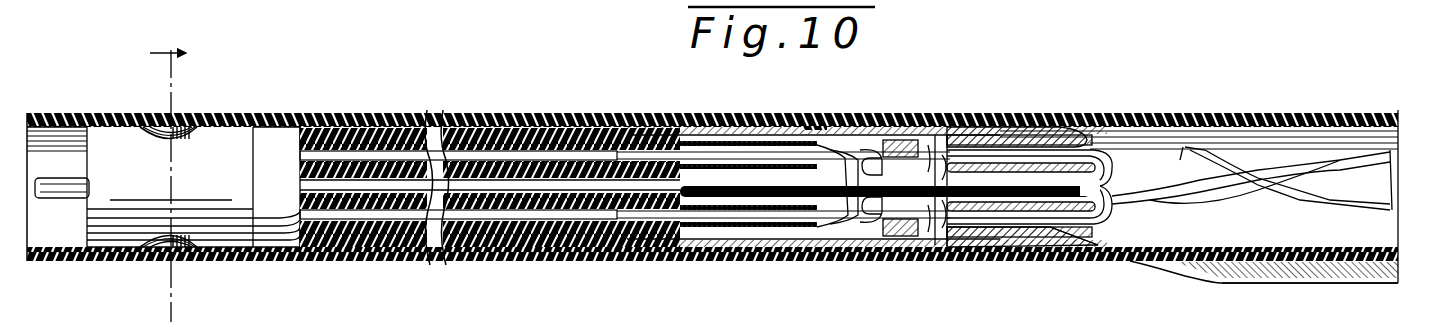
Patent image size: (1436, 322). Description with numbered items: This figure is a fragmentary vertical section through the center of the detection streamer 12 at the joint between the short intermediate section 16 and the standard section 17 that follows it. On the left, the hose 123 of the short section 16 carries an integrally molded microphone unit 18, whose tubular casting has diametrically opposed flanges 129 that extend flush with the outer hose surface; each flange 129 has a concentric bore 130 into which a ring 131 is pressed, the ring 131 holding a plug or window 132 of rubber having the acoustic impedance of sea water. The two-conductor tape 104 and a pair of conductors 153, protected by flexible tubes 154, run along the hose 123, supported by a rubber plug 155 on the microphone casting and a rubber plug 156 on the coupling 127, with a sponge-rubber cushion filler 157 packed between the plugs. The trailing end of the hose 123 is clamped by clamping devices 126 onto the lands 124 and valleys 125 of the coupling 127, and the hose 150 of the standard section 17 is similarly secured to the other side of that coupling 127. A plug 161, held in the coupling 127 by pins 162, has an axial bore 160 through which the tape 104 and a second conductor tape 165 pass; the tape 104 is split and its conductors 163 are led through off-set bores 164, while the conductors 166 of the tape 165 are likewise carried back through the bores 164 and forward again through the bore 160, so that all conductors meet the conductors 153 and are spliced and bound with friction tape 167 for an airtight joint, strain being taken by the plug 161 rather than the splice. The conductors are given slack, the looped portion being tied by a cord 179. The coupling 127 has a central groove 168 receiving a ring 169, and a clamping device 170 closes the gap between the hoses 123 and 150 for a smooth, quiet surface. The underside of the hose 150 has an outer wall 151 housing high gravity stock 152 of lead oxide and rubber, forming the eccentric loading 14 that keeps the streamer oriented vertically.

The detection streamer 12 is at (53, 111).
The eccentric loading 14 is at (1330, 297).
The short intermediate section 16 is at (100, 262).
The standard section 17 is at (1098, 262).
The microphone unit 18 is at (170, 187).
The conductor tape 104 is at (78, 185).
The hose 123 is at (462, 262).
The lands 124 is at (702, 113).
The valleys 125 is at (741, 113).
The clamping devices 126 is at (665, 113).
The coupling 127 is at (712, 262).
The flanges 129 is at (150, 126).
The bore 130 is at (193, 122).
The ring 131 is at (165, 127).
The plug or window 132 is at (176, 127).
The hose 150 is at (1130, 113).
The outer wall 151 is at (1268, 280).
The high gravity stock 152 is at (1361, 284).
The conductors 153 is at (838, 255).
The flexible tubes 154 is at (358, 140).
The rubber plug 155 is at (276, 140).
The rubber plug 156 is at (614, 113).
The cushion filler 157 is at (432, 112).
The axial bore 160 is at (1036, 160).
The plug 161 is at (1097, 236).
The pins 162 is at (985, 125).
The conductors 163 is at (936, 136).
The off-set bores 164 is at (1047, 127).
The second conductor tape 165 is at (1163, 195).
The conductors 166 is at (960, 132).
The friction tape 167 is at (900, 140).
The groove 168 is at (843, 148).
The ring 169 is at (828, 113).
The clamping device 170 is at (815, 113).
The cord 179 is at (1248, 200).